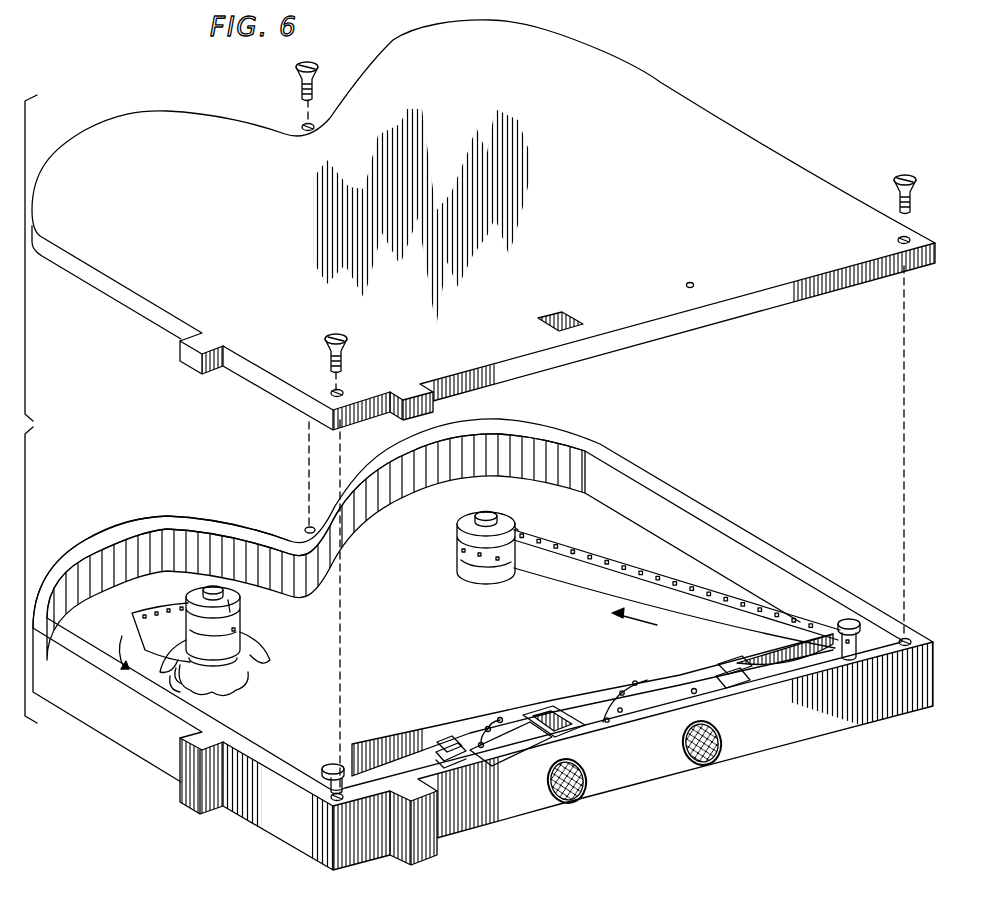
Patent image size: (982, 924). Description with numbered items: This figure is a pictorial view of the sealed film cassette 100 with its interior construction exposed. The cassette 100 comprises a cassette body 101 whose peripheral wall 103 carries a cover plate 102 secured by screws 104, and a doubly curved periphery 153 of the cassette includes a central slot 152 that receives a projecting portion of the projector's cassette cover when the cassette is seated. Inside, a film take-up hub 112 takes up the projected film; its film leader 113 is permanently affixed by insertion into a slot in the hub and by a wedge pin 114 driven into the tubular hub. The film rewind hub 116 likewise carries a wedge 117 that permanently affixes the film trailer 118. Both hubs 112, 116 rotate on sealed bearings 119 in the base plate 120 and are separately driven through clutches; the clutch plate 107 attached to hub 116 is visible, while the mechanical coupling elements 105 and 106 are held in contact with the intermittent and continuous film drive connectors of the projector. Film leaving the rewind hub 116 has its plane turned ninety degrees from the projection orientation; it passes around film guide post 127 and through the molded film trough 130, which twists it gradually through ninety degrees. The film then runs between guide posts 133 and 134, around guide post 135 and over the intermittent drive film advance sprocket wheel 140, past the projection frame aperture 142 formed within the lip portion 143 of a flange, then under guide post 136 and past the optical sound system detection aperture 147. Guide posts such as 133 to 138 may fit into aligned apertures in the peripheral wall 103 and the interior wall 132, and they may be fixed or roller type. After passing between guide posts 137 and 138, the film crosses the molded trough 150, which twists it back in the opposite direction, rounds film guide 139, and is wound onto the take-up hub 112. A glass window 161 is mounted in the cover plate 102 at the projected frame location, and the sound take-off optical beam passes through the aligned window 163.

The sealed film cassette 100 is at (768, 499).
The cassette body 101 is at (566, 497).
The cover plate 102 is at (729, 140).
The peripheral wall 103 is at (627, 511).
The screws 104 is at (294, 69).
The mechanical coupling element 105 is at (551, 802).
The mechanical coupling element 106 is at (684, 764).
The clutch plate 107 is at (233, 700).
The film take-up hub 112 is at (470, 548).
The film leader 113 is at (505, 585).
The wedge pin 114 is at (504, 505).
The film rewind hub 116 is at (185, 645).
The wedge 117 is at (246, 563).
The film trailer 118 is at (226, 633).
The bearings 119 is at (183, 682).
The base plate 120 is at (258, 690).
The film guide post 127 is at (332, 762).
The molded film trough 130 is at (392, 782).
The interior wall 132 is at (638, 664).
The film guide post 133 is at (455, 746).
The film guide post 134 is at (436, 758).
The guide post 135 is at (470, 758).
The guide post 136 is at (607, 700).
The film guide post 137 is at (740, 685).
The film guide post 138 is at (718, 679).
The film guide 139 is at (848, 620).
The intermittent drive film advance sprocket wheel 140 is at (505, 733).
The projection frame aperture 142 is at (567, 716).
The lip portion 143 is at (531, 716).
The optical sound system detection aperture 147 is at (692, 689).
The molded trough 150 is at (812, 660).
The central slot 152 is at (287, 536).
The doubly curved periphery 153 is at (157, 515).
The glass window 161 is at (570, 315).
The window 163 is at (694, 282).